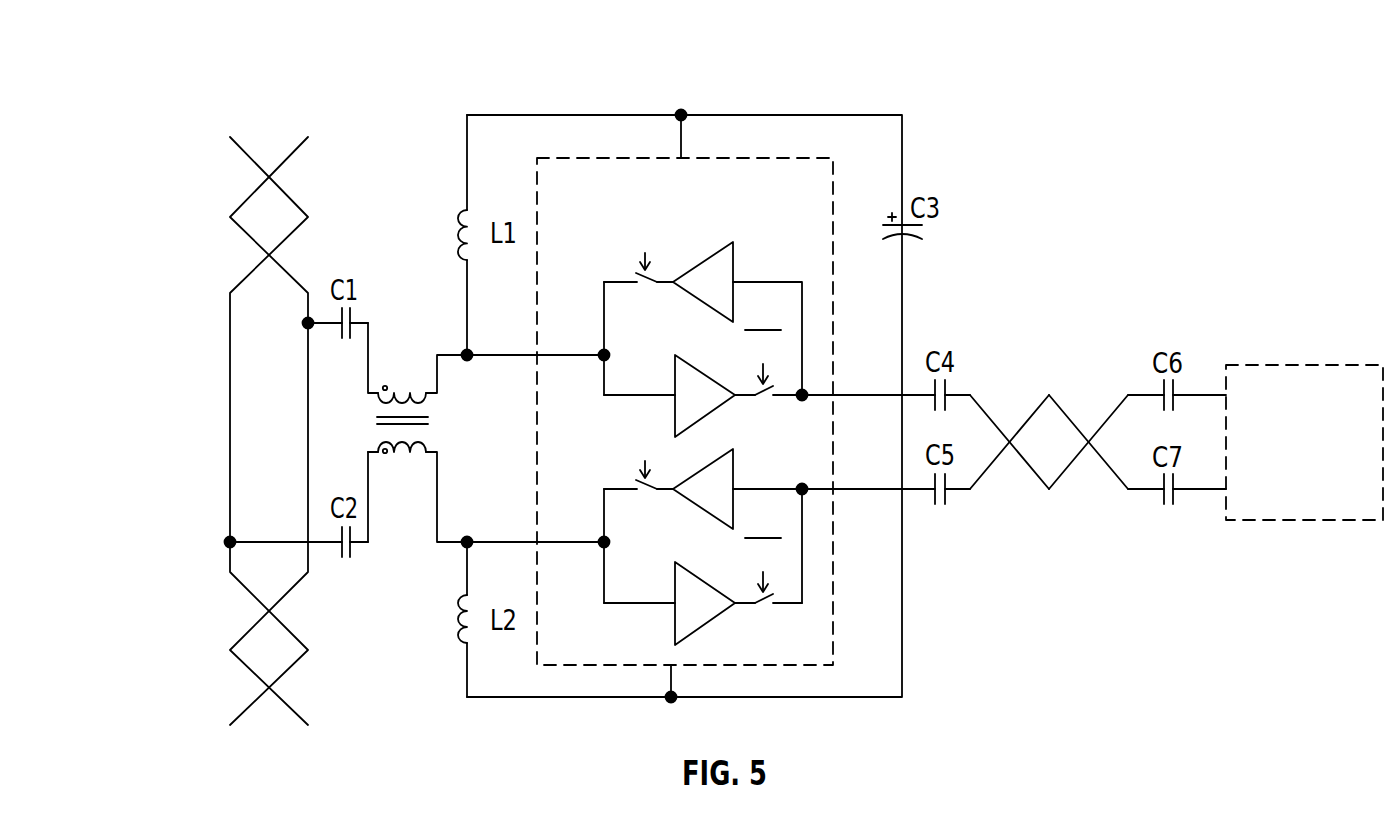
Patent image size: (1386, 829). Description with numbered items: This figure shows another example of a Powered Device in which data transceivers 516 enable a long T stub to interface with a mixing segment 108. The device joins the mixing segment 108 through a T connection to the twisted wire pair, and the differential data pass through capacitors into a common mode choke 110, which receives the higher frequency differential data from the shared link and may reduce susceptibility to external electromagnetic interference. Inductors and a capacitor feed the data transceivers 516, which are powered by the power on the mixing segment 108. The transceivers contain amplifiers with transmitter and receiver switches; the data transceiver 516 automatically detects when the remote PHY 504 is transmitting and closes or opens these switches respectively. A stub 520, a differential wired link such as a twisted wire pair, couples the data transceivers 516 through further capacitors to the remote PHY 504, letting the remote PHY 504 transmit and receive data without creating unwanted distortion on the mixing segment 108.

The mixing segment 108 is at (208, 173).
The common mode choke 110 is at (408, 360).
The data transceivers 516 is at (550, 197).
The stub 520 is at (1044, 364).
The remote PHY 504 is at (1293, 362).